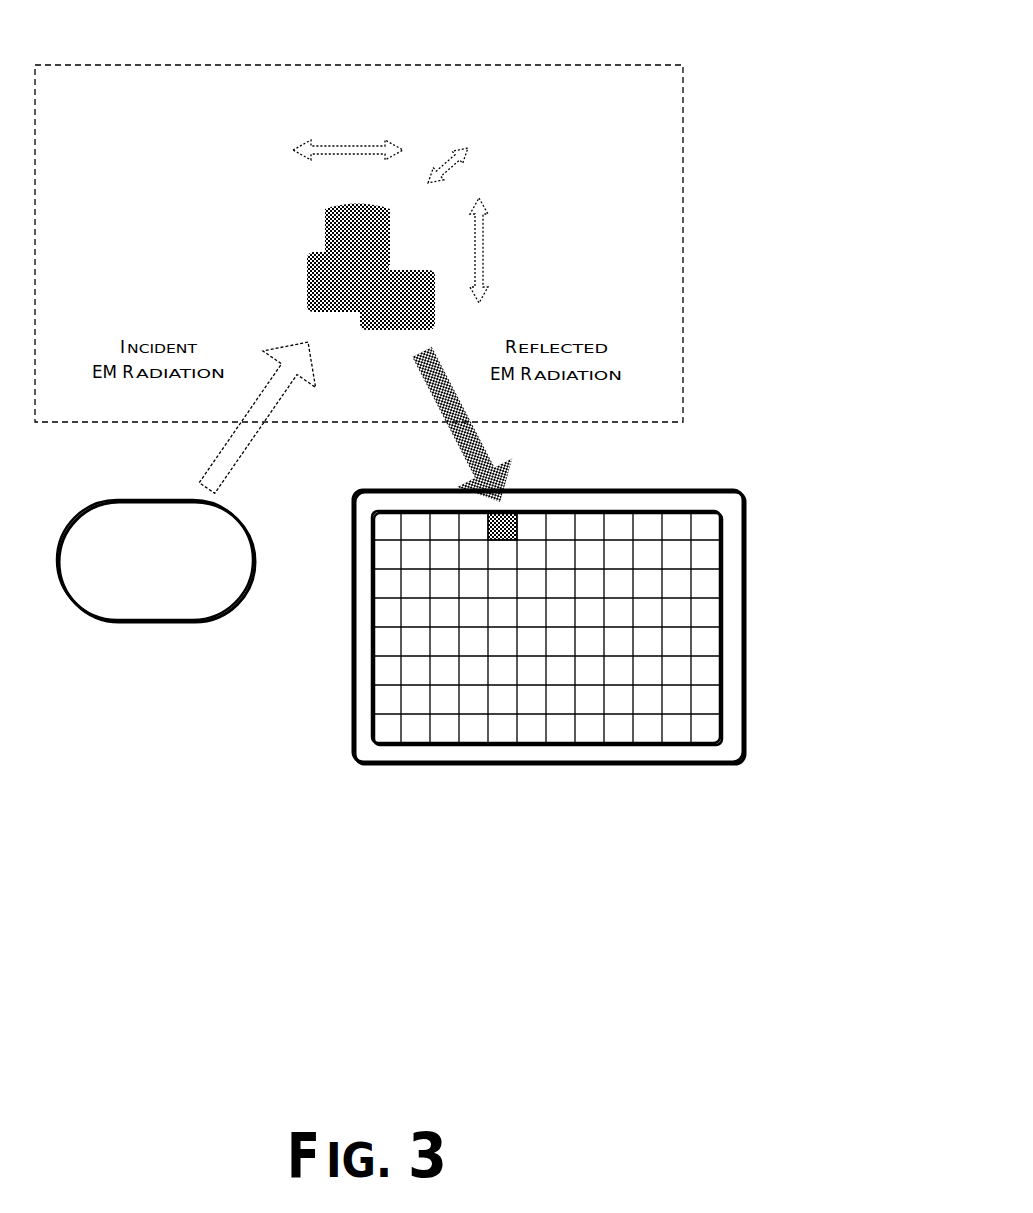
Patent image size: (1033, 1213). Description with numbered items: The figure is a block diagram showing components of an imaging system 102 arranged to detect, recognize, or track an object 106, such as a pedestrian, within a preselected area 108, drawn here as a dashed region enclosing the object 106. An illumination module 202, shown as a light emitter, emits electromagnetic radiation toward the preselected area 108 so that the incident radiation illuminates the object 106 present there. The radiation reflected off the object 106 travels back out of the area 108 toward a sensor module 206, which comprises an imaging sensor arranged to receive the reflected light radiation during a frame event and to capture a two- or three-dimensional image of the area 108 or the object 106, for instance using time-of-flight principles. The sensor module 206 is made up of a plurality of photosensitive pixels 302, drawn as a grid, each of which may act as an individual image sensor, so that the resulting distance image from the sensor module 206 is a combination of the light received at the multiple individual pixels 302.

The imaging system 102 is at (714, 327).
The object 106 is at (318, 220).
The preselected area 108 is at (605, 65).
The illumination module 202 is at (170, 595).
The sensor module 206 is at (648, 490).
The pixel 302 is at (516, 507).